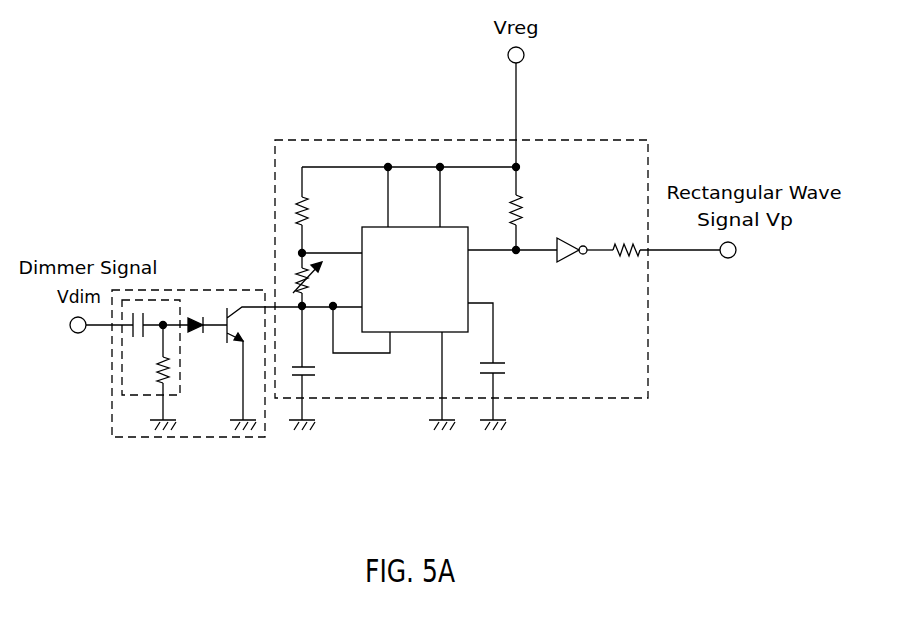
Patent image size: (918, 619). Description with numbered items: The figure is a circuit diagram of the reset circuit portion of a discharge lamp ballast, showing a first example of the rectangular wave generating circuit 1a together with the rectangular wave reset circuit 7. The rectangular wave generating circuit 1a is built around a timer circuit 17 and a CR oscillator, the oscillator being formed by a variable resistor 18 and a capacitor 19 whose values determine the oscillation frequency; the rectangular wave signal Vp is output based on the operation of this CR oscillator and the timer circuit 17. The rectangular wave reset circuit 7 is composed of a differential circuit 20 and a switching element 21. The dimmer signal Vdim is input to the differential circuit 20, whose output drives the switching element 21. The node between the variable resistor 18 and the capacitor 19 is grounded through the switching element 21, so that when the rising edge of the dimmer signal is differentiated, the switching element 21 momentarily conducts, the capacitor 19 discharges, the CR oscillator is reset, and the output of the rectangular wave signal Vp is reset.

The rectangular wave generating circuit 1a is at (583, 138).
The rectangular wave reset circuit 7 is at (181, 288).
The timer circuit 17 is at (468, 277).
The variable resistor 18 is at (299, 270).
The capacitor 19 is at (317, 370).
The differential circuit 20 is at (127, 397).
The switching element 21 is at (223, 347).